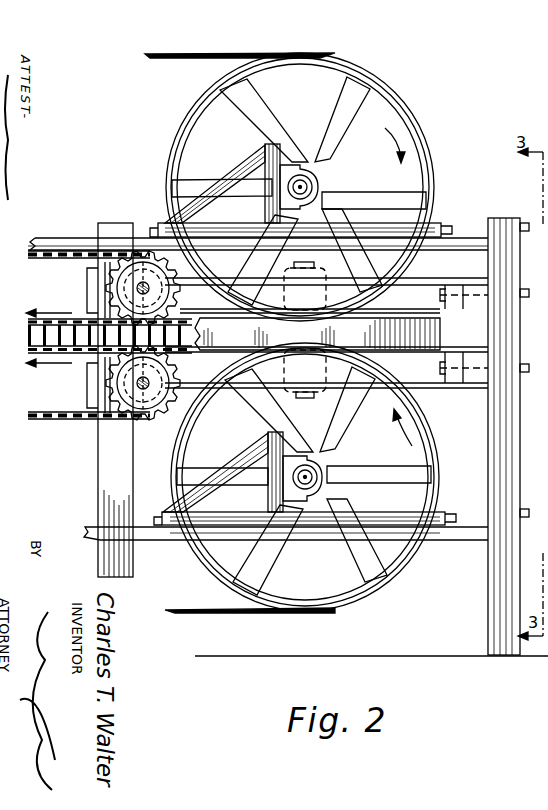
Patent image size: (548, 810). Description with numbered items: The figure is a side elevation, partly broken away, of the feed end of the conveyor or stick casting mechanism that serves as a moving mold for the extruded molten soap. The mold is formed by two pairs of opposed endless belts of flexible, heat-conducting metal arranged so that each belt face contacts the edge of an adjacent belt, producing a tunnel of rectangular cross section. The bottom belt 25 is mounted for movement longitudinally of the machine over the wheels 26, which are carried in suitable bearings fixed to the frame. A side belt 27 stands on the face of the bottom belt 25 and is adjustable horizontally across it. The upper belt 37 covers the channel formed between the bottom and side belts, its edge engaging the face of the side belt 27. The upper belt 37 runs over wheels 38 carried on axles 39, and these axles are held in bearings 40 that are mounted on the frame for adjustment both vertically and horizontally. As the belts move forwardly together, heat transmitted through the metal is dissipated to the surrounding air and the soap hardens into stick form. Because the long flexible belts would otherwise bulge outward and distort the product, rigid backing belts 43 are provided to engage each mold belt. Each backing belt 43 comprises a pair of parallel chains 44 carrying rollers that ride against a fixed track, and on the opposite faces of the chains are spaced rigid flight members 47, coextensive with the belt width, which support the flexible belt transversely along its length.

The bottom belt 25 is at (226, 613).
The wheels 26 is at (355, 567).
The side belt 27 is at (402, 332).
The upper belt 37 is at (182, 55).
The wheels 38 is at (360, 101).
The axles 39 is at (312, 184).
The bearings 40 is at (303, 166).
The rigid backing belts 43 is at (76, 406).
The chains 44 is at (66, 262).
The rigid flight members 47 is at (72, 240).